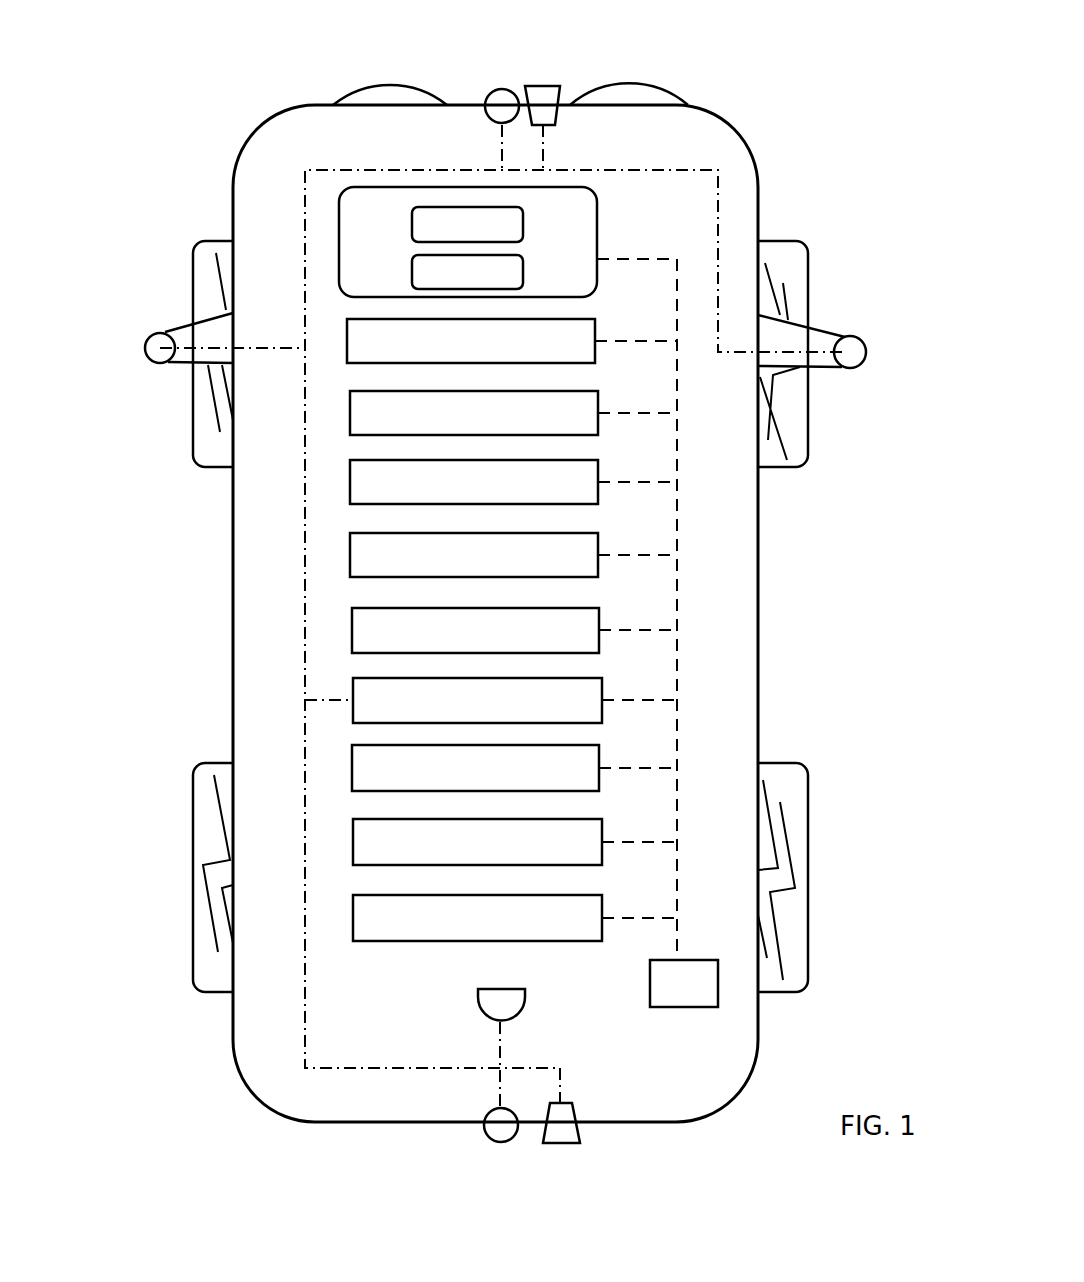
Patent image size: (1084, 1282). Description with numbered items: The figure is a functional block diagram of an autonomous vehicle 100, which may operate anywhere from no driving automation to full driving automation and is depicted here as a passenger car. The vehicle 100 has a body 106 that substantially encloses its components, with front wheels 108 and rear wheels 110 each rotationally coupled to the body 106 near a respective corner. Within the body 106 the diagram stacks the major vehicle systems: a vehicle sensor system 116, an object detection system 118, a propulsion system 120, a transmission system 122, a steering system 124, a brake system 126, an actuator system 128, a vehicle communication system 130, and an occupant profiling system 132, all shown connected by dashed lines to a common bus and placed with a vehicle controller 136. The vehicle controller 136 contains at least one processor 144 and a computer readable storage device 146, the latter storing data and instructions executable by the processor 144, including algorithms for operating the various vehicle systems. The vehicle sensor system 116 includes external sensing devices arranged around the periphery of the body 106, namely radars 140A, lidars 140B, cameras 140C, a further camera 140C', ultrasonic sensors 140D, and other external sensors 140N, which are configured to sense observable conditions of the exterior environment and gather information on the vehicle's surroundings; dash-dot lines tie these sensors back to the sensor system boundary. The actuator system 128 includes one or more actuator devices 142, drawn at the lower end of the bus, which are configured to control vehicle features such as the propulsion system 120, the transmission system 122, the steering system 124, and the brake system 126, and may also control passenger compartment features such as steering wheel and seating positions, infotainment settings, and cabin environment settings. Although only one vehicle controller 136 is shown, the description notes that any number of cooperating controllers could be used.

The autonomous vehicle 100 is at (830, 160).
The body 106 is at (238, 680).
The front wheels 108 is at (204, 292).
The rear wheels 110 is at (204, 855).
The vehicle sensor system 116 is at (471, 341).
The object detection system 118 is at (474, 413).
The propulsion system 120 is at (474, 482).
The transmission system 122 is at (474, 555).
The steering system 124 is at (475, 630).
The brake system 126 is at (477, 700).
The actuator system 128 is at (475, 768).
The vehicle communication system 130 is at (477, 842).
The occupant profiling system 132 is at (477, 918).
The vehicle controller 136 is at (578, 218).
The actuator devices 142 is at (684, 983).
The processor 144 is at (467, 224).
The computer readable storage device 146 is at (467, 272).
The radars 140A is at (500, 107).
The lidars 140B is at (492, 1128).
The cameras 140C is at (393, 690).
The speaker sensor 140C' is at (647, 1156).
The ultrasonic sensors 140D is at (545, 100).
The other external sensors 140N is at (847, 358).